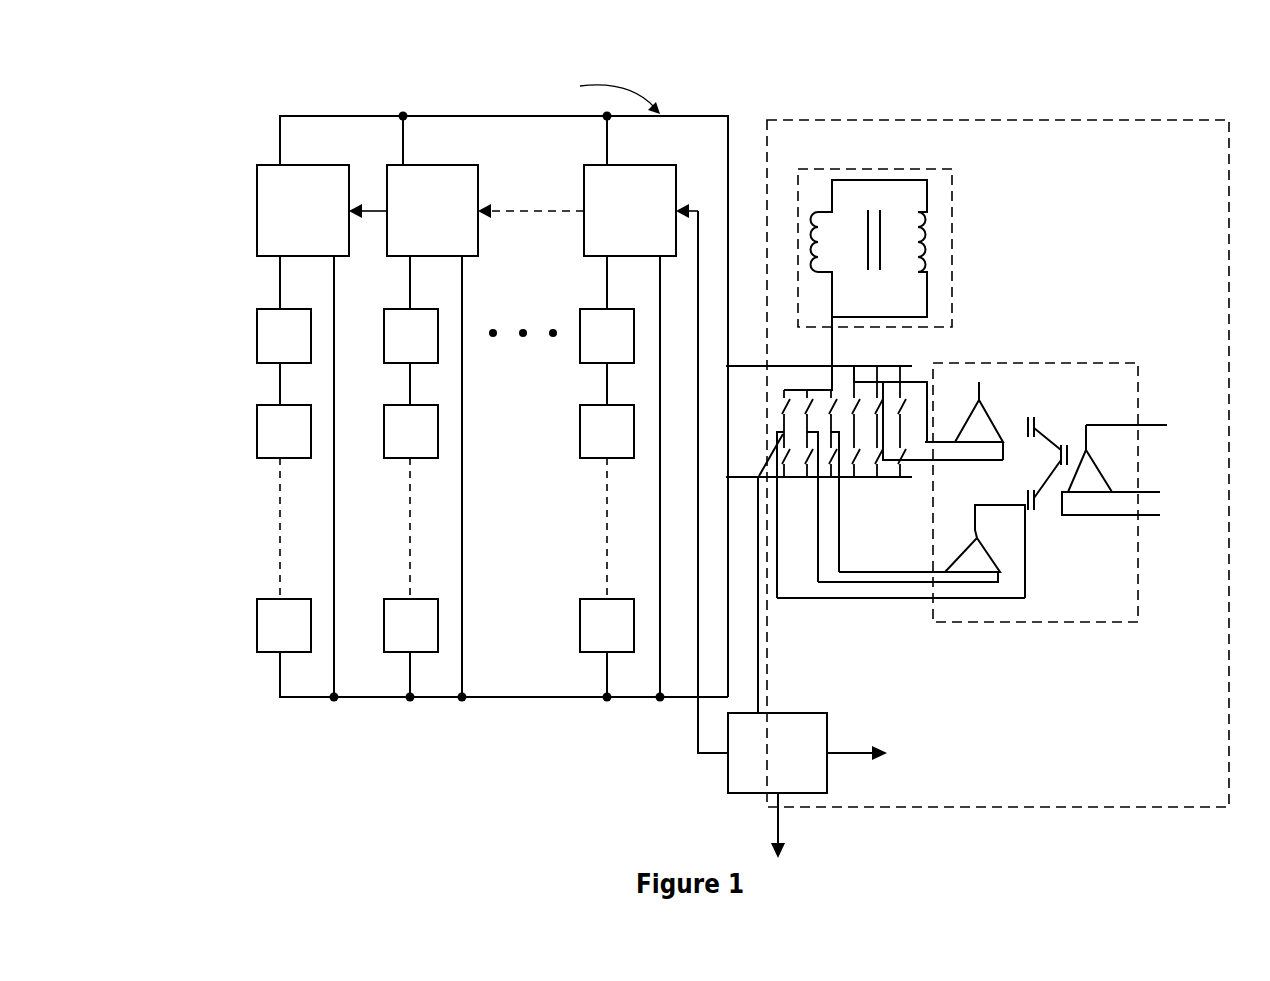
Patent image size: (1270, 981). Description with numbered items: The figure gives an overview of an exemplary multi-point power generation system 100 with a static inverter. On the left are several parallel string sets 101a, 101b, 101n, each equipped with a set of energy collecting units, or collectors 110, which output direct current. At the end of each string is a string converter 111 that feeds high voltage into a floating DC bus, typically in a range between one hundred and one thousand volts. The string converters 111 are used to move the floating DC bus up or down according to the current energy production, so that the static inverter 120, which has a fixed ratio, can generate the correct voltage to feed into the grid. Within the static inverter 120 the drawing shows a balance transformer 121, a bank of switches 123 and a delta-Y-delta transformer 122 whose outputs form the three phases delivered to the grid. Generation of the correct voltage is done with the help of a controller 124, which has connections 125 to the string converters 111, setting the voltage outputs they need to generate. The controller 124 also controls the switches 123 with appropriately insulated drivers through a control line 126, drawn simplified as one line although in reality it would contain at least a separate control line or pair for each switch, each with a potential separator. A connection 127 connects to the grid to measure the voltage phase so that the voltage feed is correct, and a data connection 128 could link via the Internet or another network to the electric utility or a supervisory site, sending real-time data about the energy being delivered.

The multi-point power generation system 100 is at (1157, 95).
The string set 101a is at (356, 712).
The string set 101b is at (385, 712).
The string set 101n is at (575, 712).
The energy collecting units (collectors) 110 is at (250, 668).
The string converter 111 is at (250, 275).
The static inverter 120 is at (828, 120).
The balance transformer 121 is at (952, 202).
The delta-Y-delta transformer 122 is at (965, 622).
The switches 123 is at (743, 418).
The controller 124 is at (798, 713).
The connections to the string converters 125 is at (703, 755).
The control line 126 is at (762, 660).
The connection to the grid 127 is at (860, 757).
The data connection 128 is at (782, 826).